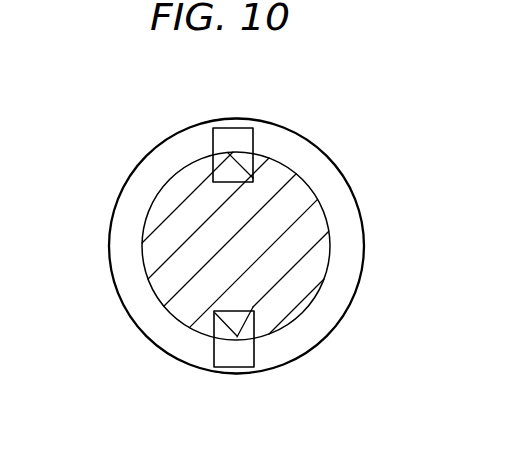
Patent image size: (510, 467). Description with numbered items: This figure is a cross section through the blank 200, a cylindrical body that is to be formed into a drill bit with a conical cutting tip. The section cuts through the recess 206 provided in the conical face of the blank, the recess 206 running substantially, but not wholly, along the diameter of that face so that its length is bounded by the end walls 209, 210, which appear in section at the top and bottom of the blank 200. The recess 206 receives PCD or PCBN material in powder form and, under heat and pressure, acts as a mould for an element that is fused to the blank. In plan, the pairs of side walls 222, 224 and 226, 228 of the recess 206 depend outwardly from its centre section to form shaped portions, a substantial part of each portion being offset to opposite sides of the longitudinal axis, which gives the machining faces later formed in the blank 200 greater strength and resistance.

The blank 200 is at (314, 331).
The recess 206 is at (253, 153).
The end wall 209 is at (222, 118).
The end wall 210 is at (232, 374).
The side wall 222 is at (204, 146).
The side wall 224 is at (238, 134).
The side wall 226 is at (212, 358).
The side wall 228 is at (260, 350).